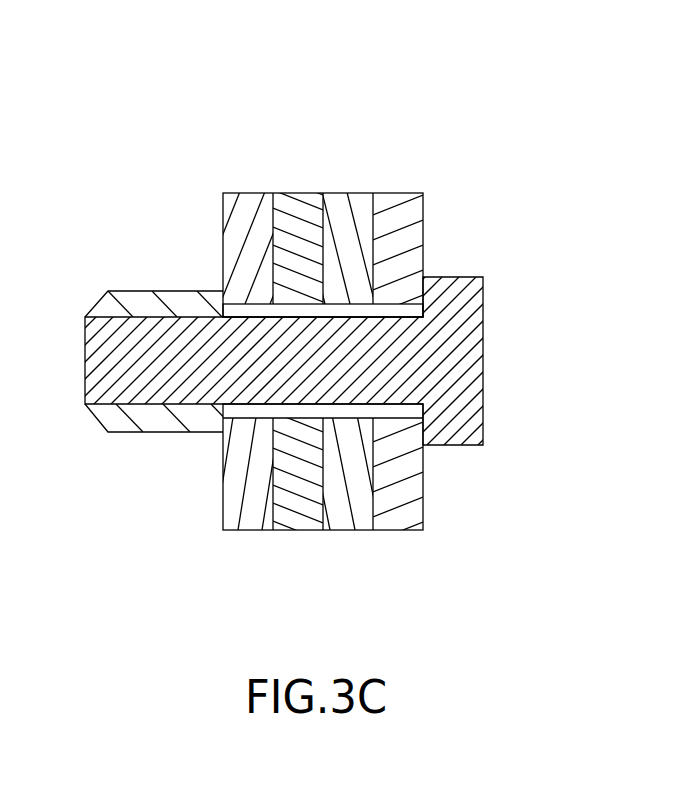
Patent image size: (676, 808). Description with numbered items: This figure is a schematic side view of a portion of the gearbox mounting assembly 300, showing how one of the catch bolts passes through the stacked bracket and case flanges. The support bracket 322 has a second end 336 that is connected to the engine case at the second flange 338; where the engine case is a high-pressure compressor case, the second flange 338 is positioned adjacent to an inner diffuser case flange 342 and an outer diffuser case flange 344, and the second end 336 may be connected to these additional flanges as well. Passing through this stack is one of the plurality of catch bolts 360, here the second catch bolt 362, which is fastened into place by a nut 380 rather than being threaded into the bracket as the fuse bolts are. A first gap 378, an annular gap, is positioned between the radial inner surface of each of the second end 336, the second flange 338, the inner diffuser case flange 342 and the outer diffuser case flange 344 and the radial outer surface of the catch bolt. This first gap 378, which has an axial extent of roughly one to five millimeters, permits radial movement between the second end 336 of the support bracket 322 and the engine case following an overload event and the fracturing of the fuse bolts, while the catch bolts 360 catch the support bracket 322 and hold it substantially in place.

The gearbox mounting assembly 300 is at (121, 145).
The nut 380 is at (145, 300).
The first gap 378 is at (392, 310).
The second catch bolt 362 is at (483, 333).
The plurality of catch bolts 360 is at (468, 408).
The support bracket 322 is at (235, 455).
The second end 336 is at (235, 487).
The second flange 338 is at (293, 507).
The inner diffuser case flange 342 is at (350, 508).
The outer diffuser case flange 344 is at (410, 493).